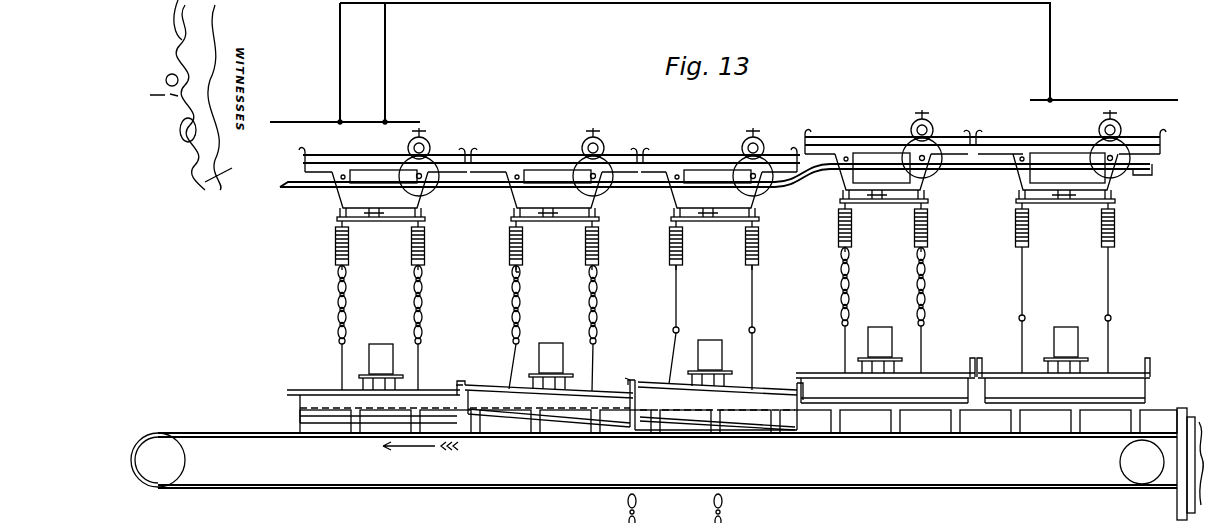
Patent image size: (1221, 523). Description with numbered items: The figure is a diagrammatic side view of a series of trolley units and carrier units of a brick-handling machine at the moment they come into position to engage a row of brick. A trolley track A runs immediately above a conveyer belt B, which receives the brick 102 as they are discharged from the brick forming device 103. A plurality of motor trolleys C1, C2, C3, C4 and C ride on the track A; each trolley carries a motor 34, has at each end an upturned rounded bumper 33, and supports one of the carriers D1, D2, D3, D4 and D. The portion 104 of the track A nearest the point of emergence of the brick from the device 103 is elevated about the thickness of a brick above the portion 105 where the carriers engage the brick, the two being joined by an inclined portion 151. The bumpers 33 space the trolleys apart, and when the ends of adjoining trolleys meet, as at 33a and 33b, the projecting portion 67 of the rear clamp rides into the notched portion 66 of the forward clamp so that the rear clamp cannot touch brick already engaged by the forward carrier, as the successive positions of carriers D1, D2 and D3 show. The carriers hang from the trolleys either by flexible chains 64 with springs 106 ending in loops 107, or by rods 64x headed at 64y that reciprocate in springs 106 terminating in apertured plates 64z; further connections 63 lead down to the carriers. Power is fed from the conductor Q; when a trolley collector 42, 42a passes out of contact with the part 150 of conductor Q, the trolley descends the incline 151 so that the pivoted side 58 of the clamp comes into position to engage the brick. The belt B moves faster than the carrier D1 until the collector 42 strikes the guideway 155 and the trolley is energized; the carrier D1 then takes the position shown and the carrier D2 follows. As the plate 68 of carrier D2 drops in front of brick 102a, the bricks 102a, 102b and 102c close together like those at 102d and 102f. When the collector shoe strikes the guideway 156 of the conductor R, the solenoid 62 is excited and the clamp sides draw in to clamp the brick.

The electrical conductor Q is at (307, 120).
The guideway of conductor Q 155 is at (370, 110).
The electrical conductor R is at (400, 120).
The guideway of conductor R 156 is at (425, 118).
The carrier C2 is at (543, 160).
The trolley pin 42a is at (597, 127).
The motor 34 is at (604, 146).
The carrier C3 is at (713, 163).
The bumper end position 33a is at (797, 152).
The bumper end position 33b is at (806, 135).
The carrier C4 is at (877, 147).
The upturned bumper 33 is at (966, 134).
The motor trolley C is at (1015, 155).
The part of conductor Q 150 is at (1058, 100).
The collector 42 is at (1106, 108).
The trolley track A is at (1135, 173).
The trolley C1 is at (355, 163).
The spring 106 is at (521, 248).
The track portion 105 is at (633, 188).
The loop 107 is at (520, 278).
The flexible chain 64 is at (588, 312).
The inclined track portion 151 is at (803, 190).
The guide rail 104 is at (978, 170).
The rod head 64y is at (678, 261).
The apertured plate 64z is at (677, 272).
The rod 64x is at (752, 316).
The carrier D1 is at (351, 400).
The solenoid 62 is at (402, 337).
The carrier D2 is at (496, 393).
The tray hanger rod 63 is at (510, 378).
The projecting portion of clamp 67 is at (457, 385).
The notched portion of clamp 66 is at (464, 396).
The plate 68 is at (300, 408).
The carrier D3 is at (647, 395).
The pivoted side 58 is at (760, 405).
The tray D4 is at (940, 388).
The carrier device D is at (1028, 388).
The brick forming device 103 is at (1192, 410).
The brick 102d is at (324, 437).
The brick 102c is at (373, 437).
The brick 102f is at (432, 443).
The brick 102a is at (486, 428).
The brick 102b is at (566, 430).
The brick 102 is at (785, 433).
The conveyer belt B is at (505, 488).